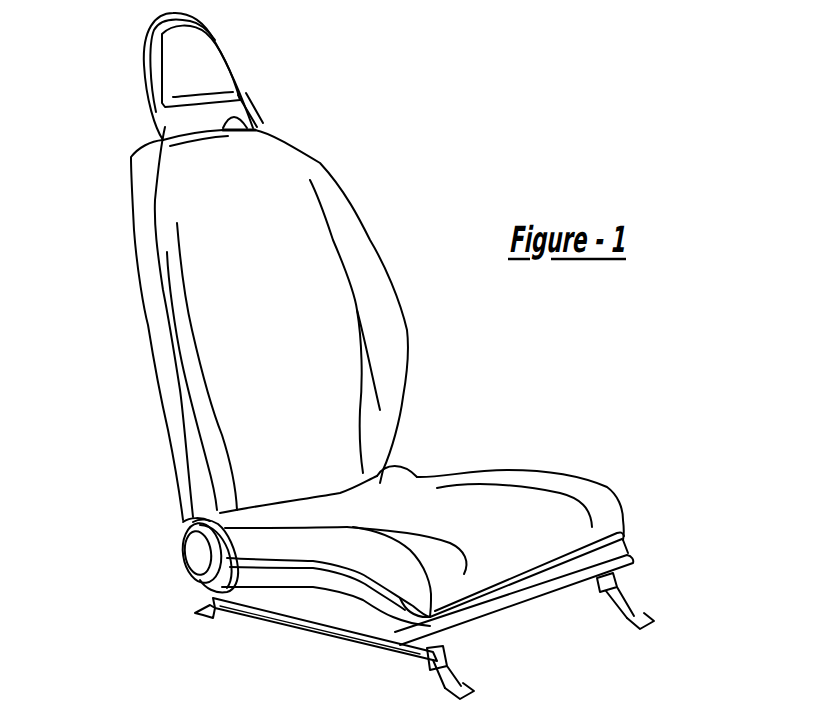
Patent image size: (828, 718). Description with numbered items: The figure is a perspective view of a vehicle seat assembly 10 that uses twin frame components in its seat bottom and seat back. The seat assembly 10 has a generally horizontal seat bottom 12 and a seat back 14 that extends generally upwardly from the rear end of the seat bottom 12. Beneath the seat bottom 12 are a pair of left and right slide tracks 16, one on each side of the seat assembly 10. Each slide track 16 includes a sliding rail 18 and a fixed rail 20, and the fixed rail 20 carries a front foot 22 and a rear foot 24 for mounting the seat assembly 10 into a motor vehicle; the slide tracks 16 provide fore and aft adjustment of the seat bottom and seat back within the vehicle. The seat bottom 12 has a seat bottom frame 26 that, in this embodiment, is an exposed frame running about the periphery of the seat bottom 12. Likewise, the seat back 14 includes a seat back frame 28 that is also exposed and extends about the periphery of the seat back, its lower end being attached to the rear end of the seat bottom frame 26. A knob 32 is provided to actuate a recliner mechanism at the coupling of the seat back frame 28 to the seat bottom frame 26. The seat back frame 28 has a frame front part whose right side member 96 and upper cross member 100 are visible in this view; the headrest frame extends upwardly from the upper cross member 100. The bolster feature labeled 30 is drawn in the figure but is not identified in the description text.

The seat assembly 10 is at (402, 192).
The seat bottom 12 is at (593, 451).
The seat back 14 is at (137, 267).
The slide tracks 16 is at (292, 626).
The sliding rail 18 is at (437, 648).
The fixed rail 20 is at (368, 643).
The front foot 22 is at (473, 692).
The rear foot 24 is at (195, 610).
The seat bottom frame 26 is at (628, 537).
The seat back frame 28 is at (157, 383).
The bolster 30 is at (187, 523).
The knob 32 is at (197, 582).
The right side member 96 is at (152, 321).
The upper cross member 100 is at (250, 110).